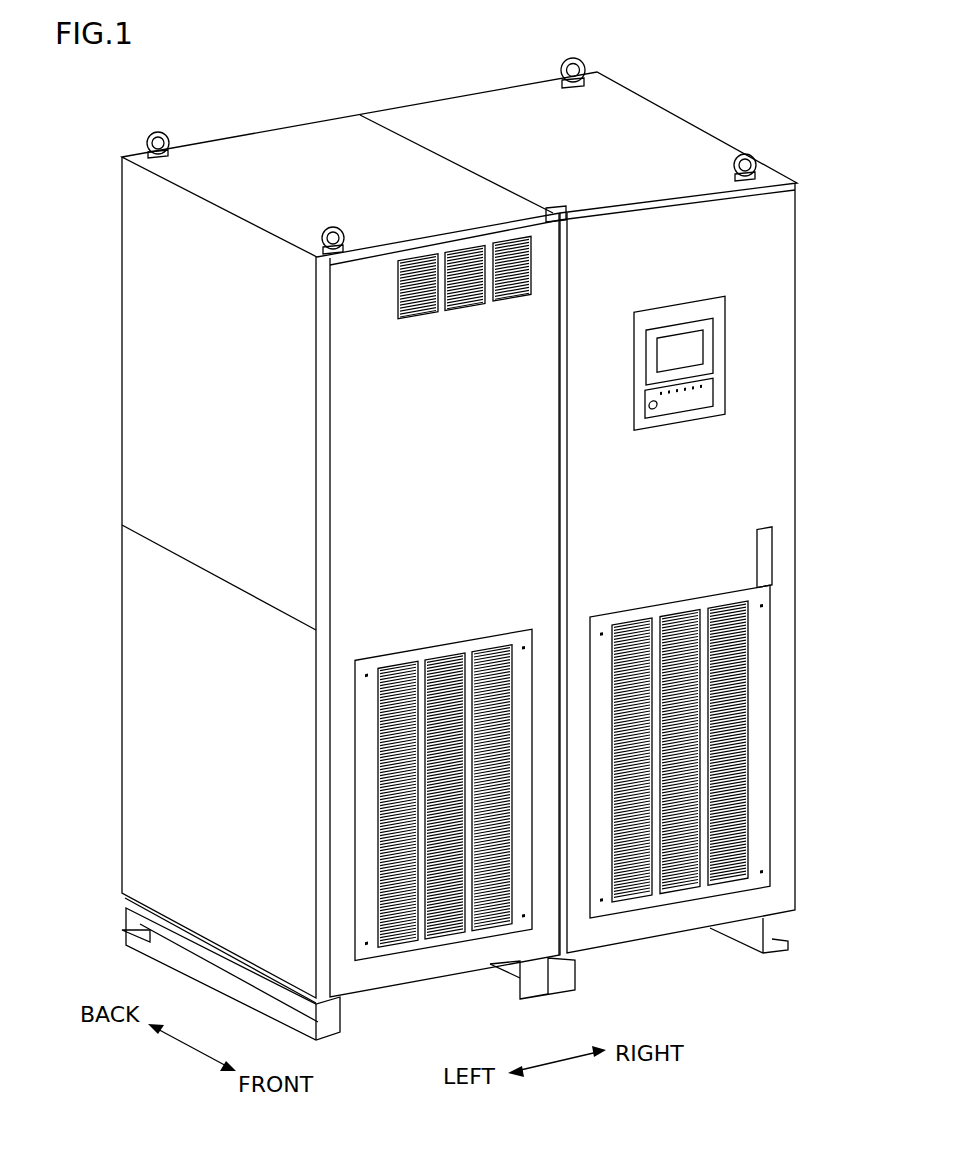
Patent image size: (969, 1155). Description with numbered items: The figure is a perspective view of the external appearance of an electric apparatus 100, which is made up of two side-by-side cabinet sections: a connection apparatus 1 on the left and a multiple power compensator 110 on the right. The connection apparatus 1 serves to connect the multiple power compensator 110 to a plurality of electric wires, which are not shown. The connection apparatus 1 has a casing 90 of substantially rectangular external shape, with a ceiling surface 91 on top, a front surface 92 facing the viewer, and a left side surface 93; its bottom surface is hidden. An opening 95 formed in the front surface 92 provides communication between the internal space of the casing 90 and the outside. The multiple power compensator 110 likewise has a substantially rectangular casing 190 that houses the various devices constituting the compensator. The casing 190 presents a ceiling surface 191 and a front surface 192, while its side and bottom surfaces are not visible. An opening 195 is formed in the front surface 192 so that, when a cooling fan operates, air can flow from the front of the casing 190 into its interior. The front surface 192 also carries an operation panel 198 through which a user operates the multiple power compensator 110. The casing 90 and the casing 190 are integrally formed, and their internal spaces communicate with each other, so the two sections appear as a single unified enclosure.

The electric apparatus 100 is at (135, 104).
The connection apparatus 1 is at (278, 170).
The ceiling surface 91 is at (345, 157).
The multiple power compensator 110 is at (513, 126).
The ceiling surface 191 is at (675, 152).
The casing 190 is at (757, 238).
The operation panel 198 is at (693, 347).
The front surface 192 is at (765, 443).
The casing 90 is at (158, 269).
The front surface 92 is at (357, 465).
The left side surface 93 is at (150, 618).
The opening 95 is at (443, 885).
The opening 195 is at (680, 845).